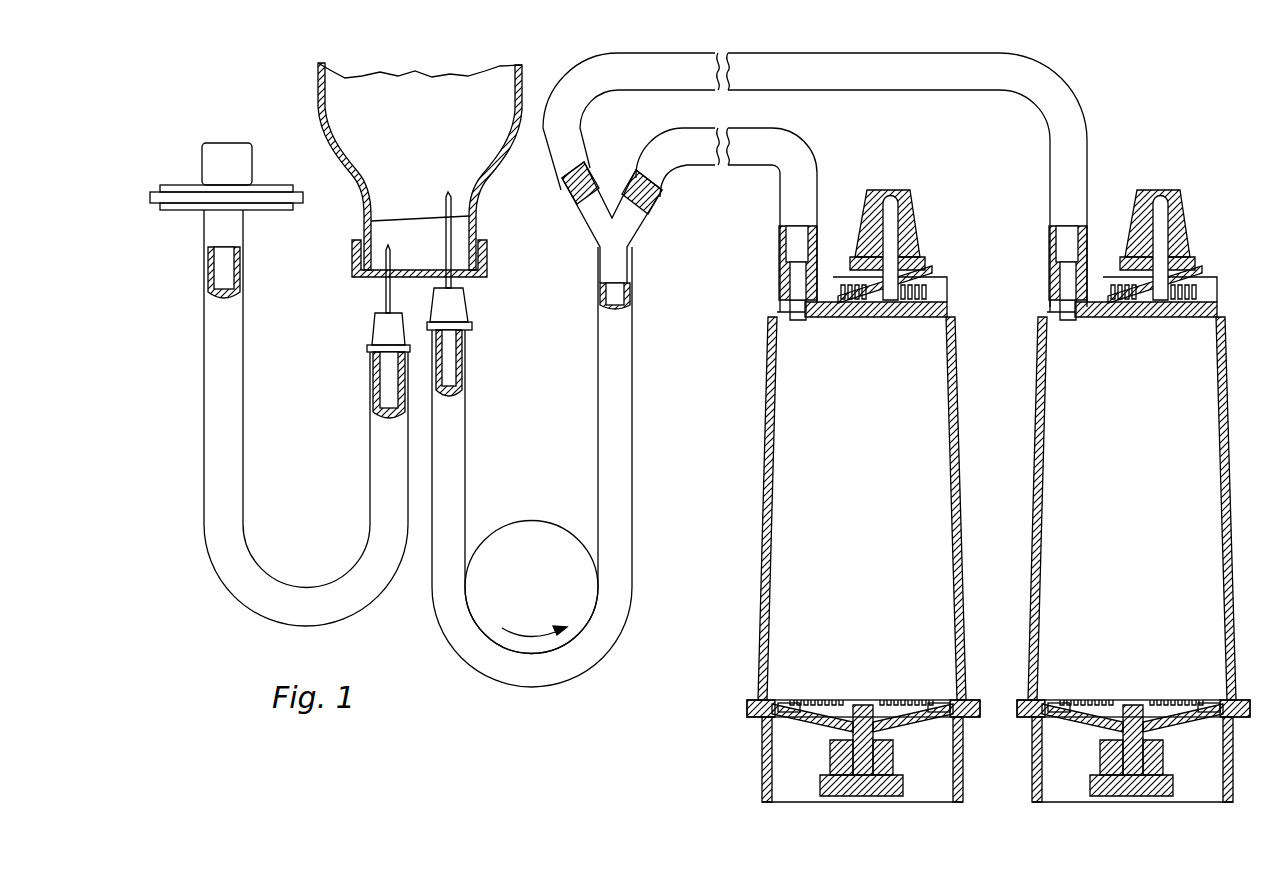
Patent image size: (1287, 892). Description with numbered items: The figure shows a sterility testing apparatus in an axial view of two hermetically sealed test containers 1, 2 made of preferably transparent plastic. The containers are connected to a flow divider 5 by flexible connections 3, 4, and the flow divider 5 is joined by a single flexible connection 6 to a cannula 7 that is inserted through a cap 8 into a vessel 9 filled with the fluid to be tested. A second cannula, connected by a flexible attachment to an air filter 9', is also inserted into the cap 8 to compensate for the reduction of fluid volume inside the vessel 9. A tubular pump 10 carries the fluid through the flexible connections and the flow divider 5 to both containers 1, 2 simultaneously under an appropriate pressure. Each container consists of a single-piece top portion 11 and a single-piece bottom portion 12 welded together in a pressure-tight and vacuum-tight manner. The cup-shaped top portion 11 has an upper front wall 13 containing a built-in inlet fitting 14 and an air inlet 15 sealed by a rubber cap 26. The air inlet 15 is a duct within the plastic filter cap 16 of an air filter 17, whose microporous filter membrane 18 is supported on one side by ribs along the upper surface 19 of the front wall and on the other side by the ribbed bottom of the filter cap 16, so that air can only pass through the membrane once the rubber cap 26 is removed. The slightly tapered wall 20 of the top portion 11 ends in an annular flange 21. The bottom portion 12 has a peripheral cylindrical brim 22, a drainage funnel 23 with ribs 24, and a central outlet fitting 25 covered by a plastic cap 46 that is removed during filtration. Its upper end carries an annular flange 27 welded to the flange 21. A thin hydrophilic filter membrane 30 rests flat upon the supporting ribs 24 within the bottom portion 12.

The test container 1 is at (868, 511).
The test container 2 is at (1139, 508).
The flexible connection 3 is at (788, 170).
The flexible connection 4 is at (1058, 91).
The flow divider 5 is at (615, 257).
The flexible connection 6 is at (613, 537).
The cannula 7 is at (371, 221).
The cap 8 is at (370, 276).
The vessel 9 is at (395, 166).
The air filter 9' is at (275, 379).
The tubular pump 10 is at (528, 533).
The top portion 11 is at (762, 546).
The bottom portion 12 is at (760, 765).
The upper front wall 13 is at (815, 300).
The inlet fitting 14 is at (795, 279).
The air inlet 15 is at (892, 235).
The filter cap 16 is at (908, 270).
The air filter 17 is at (943, 283).
The microporous filter membrane 18 is at (917, 323).
The upper surface 19 is at (852, 320).
The tapered wall 20 is at (760, 607).
The annular flange 21 is at (752, 700).
The cylindrical brim 22 is at (985, 768).
The funnel 23 is at (915, 721).
The ribs 24 is at (883, 710).
The outlet fitting 25 is at (837, 735).
The rubber cap 26 is at (890, 190).
The annular flange 27 is at (747, 709).
The filter membrane 30 is at (822, 700).
The plastic cap 46 is at (823, 782).